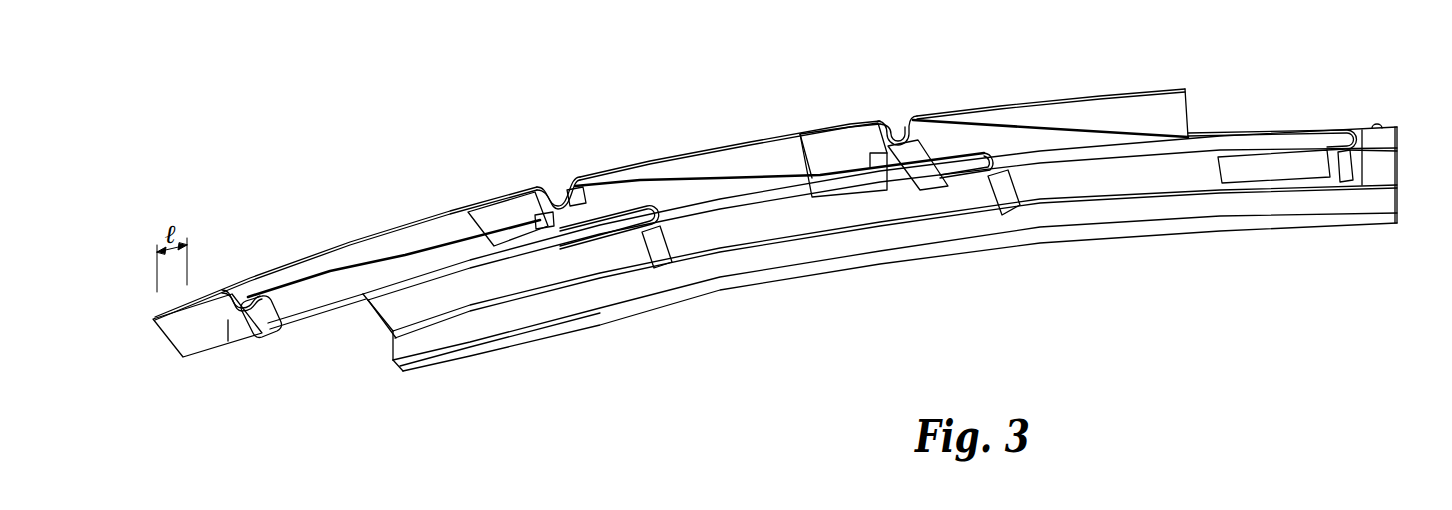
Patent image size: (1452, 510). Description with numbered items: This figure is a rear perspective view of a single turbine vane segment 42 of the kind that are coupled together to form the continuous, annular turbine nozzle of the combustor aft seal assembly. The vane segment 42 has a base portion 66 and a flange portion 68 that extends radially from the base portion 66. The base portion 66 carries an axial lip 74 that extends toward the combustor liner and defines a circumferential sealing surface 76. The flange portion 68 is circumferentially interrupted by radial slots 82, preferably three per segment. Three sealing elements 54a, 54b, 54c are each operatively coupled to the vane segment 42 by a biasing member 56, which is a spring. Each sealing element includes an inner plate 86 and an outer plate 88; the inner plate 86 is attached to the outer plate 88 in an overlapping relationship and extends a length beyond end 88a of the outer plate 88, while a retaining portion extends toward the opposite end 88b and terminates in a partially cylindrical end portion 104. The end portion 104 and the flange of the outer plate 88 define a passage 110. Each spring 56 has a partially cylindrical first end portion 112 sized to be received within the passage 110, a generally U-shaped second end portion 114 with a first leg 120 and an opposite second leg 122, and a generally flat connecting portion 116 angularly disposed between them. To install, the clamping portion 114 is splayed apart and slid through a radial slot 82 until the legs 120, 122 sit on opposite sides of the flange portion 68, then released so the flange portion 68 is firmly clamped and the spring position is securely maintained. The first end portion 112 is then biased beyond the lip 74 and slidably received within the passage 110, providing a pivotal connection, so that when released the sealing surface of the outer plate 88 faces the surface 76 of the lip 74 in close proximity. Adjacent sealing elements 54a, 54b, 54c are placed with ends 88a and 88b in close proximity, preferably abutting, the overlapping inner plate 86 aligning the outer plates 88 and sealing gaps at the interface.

The turbine vane segment 42 is at (849, 276).
The sealing element 54a is at (983, 108).
The sealing element 54b is at (626, 160).
The sealing element 54c is at (291, 249).
The biasing member 56 is at (368, 258).
The base portion 66 is at (1202, 211).
The flange portion 68 is at (1135, 174).
The axial lip 74 is at (1399, 130).
The circumferential sealing surface 76 is at (1376, 122).
The radial slot 82 is at (657, 222).
The inner plate 86 is at (173, 332).
The outer plate 88 is at (413, 210).
The end of outer plate 88a is at (176, 308).
The end of outer plate 88b is at (498, 195).
The partially cylindrical end portion 104 is at (920, 160).
The passage 110 is at (893, 118).
The first end portion 112 is at (903, 130).
The second end portion 114 is at (635, 208).
The connecting portion 116 is at (1081, 142).
The first leg 120 is at (1281, 167).
The second leg 122 is at (1308, 130).